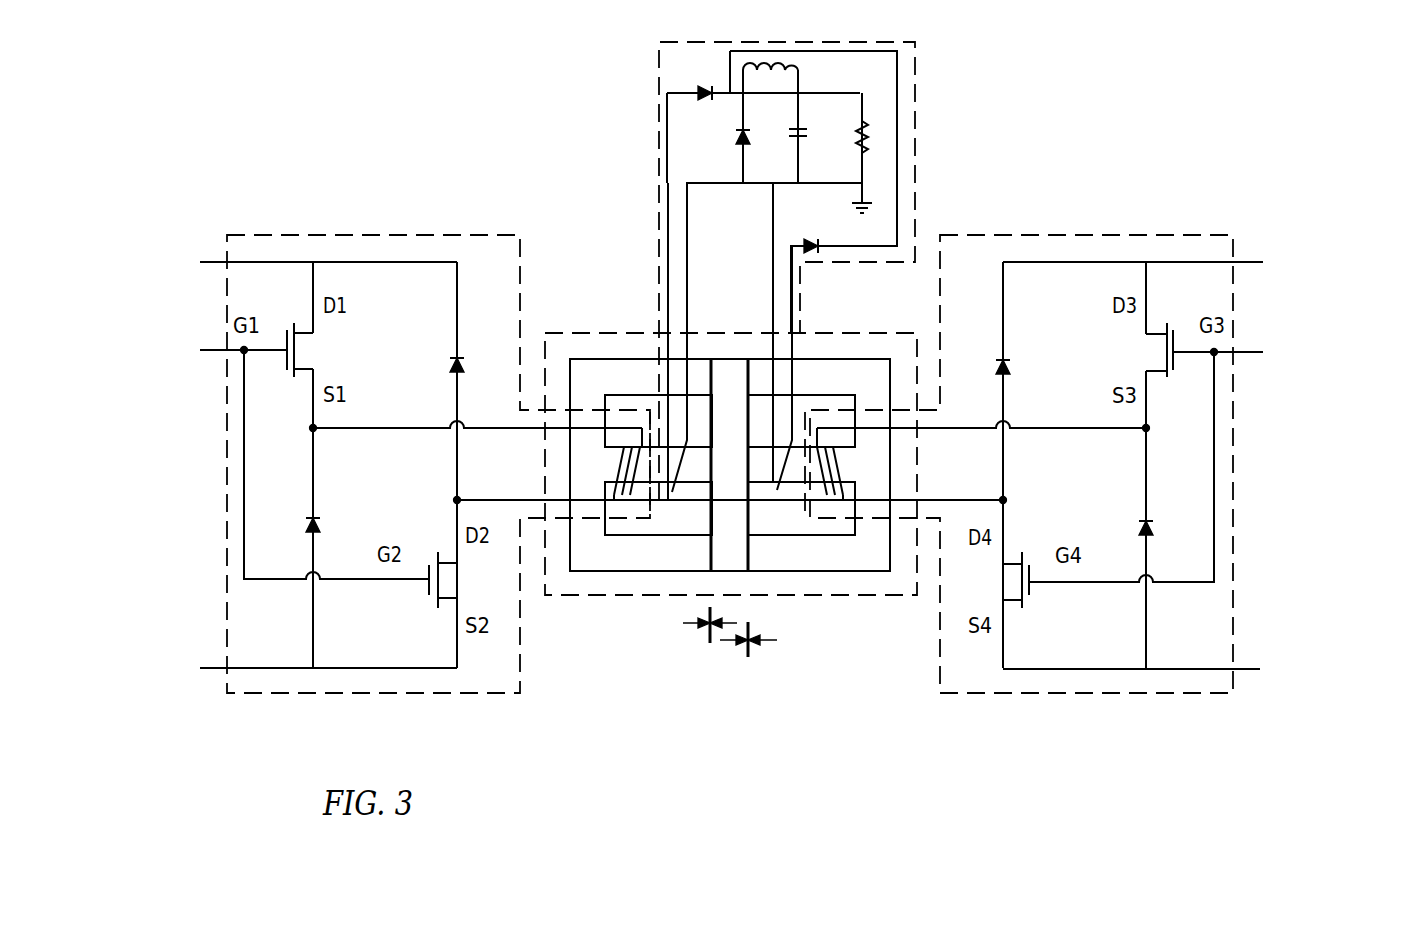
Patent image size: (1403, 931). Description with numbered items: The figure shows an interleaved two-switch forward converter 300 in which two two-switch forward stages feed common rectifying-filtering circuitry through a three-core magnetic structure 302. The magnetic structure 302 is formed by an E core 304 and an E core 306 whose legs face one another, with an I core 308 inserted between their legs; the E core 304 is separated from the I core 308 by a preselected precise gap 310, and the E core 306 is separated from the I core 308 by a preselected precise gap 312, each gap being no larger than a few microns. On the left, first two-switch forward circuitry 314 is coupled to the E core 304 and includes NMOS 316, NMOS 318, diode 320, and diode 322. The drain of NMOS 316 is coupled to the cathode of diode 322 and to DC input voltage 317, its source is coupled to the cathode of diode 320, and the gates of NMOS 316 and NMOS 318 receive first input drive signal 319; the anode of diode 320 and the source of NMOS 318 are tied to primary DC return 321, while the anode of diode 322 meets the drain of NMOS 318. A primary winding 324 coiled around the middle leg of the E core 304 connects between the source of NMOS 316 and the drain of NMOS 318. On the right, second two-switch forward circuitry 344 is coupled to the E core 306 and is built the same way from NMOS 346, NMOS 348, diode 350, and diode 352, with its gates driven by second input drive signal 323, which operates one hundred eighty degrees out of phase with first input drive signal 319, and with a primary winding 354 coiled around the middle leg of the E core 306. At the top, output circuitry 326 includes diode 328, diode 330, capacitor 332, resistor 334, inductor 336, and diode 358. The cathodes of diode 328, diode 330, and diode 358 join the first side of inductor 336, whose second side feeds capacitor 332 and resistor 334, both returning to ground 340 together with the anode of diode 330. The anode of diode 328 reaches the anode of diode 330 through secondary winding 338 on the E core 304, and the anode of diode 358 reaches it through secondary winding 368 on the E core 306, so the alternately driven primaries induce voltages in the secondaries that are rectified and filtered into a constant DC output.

The interleaved two-switch forward converter 300 is at (1031, 108).
The three-core magnetic structure 302 is at (622, 333).
The E core 304 is at (588, 358).
The E core 306 is at (876, 571).
The I core 308 is at (735, 358).
The preselected precise gap 310 is at (710, 645).
The preselected precise gap 312 is at (748, 659).
The first two-switch forward circuitry 314 is at (252, 233).
The NMOS 316 is at (280, 323).
The DC input voltage 317 is at (117, 247).
The NMOS 318 is at (428, 555).
The first input drive signal 319 is at (138, 377).
The diode 320 is at (298, 513).
The primary DC return 321 is at (128, 695).
The diode 322 is at (443, 355).
The second input drive signal 323 is at (1335, 387).
The primary winding 324 is at (630, 492).
The output circuitry 326 is at (659, 75).
The diode 328 is at (708, 98).
The diode 330 is at (727, 133).
The capacitor 332 is at (787, 133).
The resistor 334 is at (853, 133).
The inductor 336 is at (798, 85).
The secondary winding 338 is at (672, 492).
The ground 340 is at (850, 212).
The second two-switch forward circuitry 344 is at (1207, 237).
The NMOS 346 is at (1178, 325).
The NMOS 348 is at (1033, 557).
The diode 350 is at (1160, 517).
The diode 352 is at (1012, 360).
The primary winding 354 is at (822, 440).
The diode 358 is at (825, 243).
The secondary winding 368 is at (781, 492).